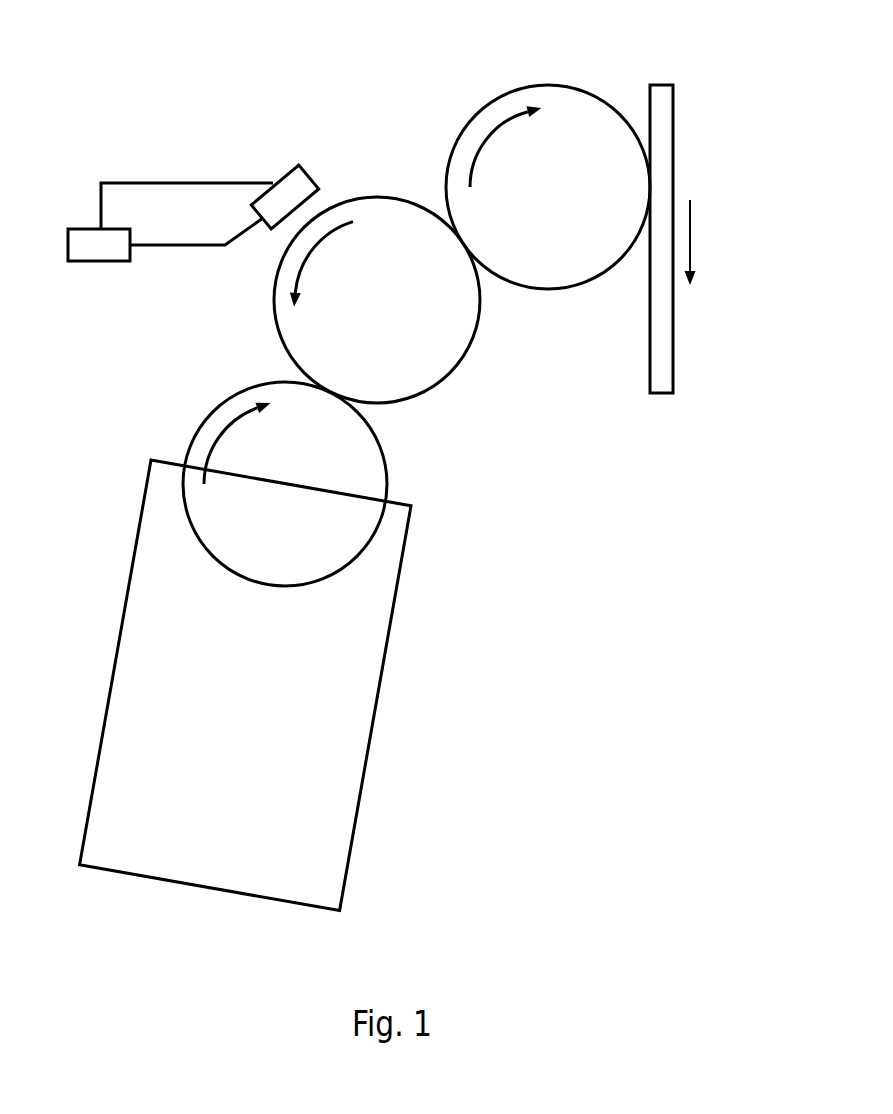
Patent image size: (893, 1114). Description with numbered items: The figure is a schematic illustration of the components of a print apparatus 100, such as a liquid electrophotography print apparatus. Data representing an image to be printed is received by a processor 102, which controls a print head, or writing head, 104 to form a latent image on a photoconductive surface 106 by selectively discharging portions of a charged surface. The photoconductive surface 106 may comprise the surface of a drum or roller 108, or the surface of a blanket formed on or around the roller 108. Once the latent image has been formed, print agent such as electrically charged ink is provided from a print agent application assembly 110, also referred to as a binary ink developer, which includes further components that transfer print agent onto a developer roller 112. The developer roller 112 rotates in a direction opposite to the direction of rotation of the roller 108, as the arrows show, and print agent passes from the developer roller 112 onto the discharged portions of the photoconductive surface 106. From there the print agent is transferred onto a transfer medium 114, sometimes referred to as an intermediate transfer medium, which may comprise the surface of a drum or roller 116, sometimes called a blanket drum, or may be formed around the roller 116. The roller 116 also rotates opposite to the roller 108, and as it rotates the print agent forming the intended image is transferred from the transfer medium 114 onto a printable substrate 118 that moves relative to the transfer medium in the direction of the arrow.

The print apparatus 100 is at (109, 68).
The processor 102 is at (82, 262).
The print head 104 is at (297, 173).
The photoconductive surface 106 is at (433, 383).
The roller 108 is at (395, 327).
The print agent application assembly 110 is at (260, 712).
The developer roller 112 is at (307, 496).
The transfer medium 114 is at (515, 93).
The roller 116 is at (545, 157).
The printable substrate 118 is at (673, 130).